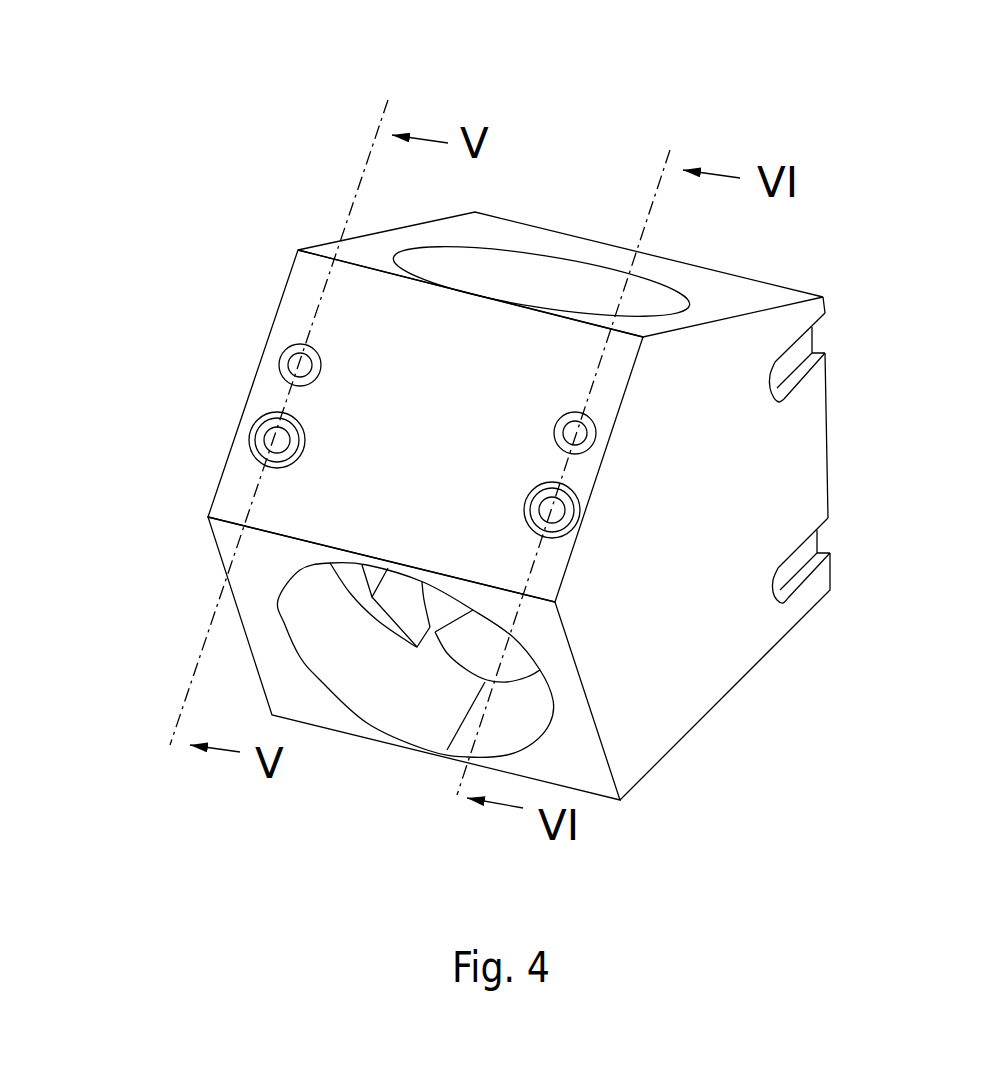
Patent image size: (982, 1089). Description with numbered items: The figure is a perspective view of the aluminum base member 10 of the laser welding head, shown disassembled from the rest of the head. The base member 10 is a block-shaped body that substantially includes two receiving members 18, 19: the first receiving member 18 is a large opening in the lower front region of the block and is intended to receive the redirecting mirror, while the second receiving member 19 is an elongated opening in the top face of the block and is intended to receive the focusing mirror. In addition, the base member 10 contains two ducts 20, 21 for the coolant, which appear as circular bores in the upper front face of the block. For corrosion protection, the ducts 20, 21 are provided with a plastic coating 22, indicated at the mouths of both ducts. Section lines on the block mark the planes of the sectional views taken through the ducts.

The base member 10 is at (235, 242).
The receiving member 18 is at (393, 688).
The receiving member 19 is at (517, 278).
The duct 20 is at (263, 438).
The duct 21 is at (558, 510).
The plastic coating 22 is at (250, 450).